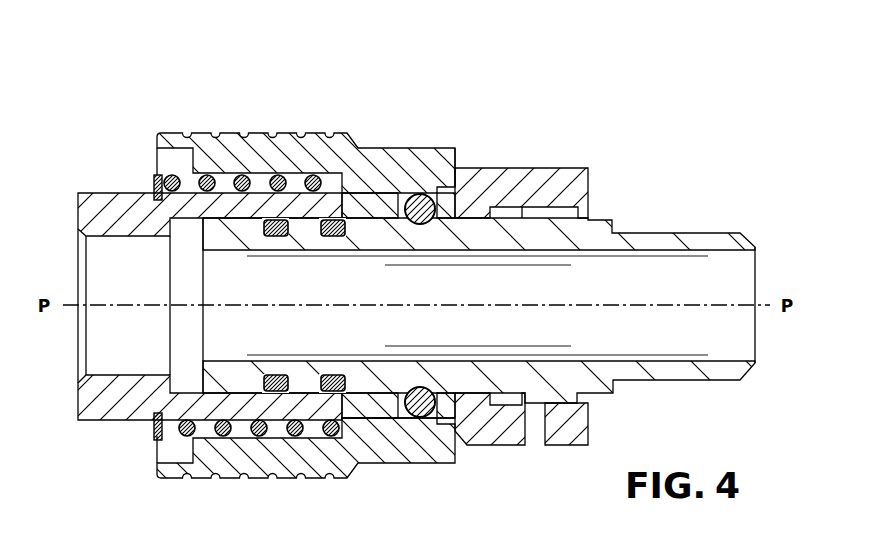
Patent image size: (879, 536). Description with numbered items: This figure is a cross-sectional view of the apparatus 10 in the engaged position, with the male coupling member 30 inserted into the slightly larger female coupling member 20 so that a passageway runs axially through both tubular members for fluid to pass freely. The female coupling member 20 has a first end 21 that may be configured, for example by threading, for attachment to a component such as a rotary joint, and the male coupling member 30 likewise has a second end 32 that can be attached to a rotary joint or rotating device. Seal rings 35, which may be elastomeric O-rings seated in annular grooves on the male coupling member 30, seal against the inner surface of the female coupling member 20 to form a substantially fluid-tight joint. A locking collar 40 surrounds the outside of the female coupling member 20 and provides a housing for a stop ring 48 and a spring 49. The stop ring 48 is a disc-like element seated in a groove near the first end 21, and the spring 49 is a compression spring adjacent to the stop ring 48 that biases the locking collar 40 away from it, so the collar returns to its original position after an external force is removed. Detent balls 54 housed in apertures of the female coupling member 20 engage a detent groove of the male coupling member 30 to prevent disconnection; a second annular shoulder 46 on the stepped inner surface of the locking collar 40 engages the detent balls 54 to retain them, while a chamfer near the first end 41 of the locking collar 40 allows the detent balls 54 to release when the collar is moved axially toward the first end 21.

The apparatus 10 is at (686, 124).
The female coupling member 20 is at (96, 206).
The first end 21 is at (77, 254).
The male coupling member 30 is at (746, 241).
The second end 32 is at (758, 270).
The seal ring 35 is at (326, 220).
The locking collar 40 is at (392, 163).
The first end 41 is at (456, 163).
The second annular shoulder 46 is at (347, 427).
The stop ring 48 is at (152, 180).
The spring 49 is at (171, 176).
The detent ball 54 is at (422, 207).